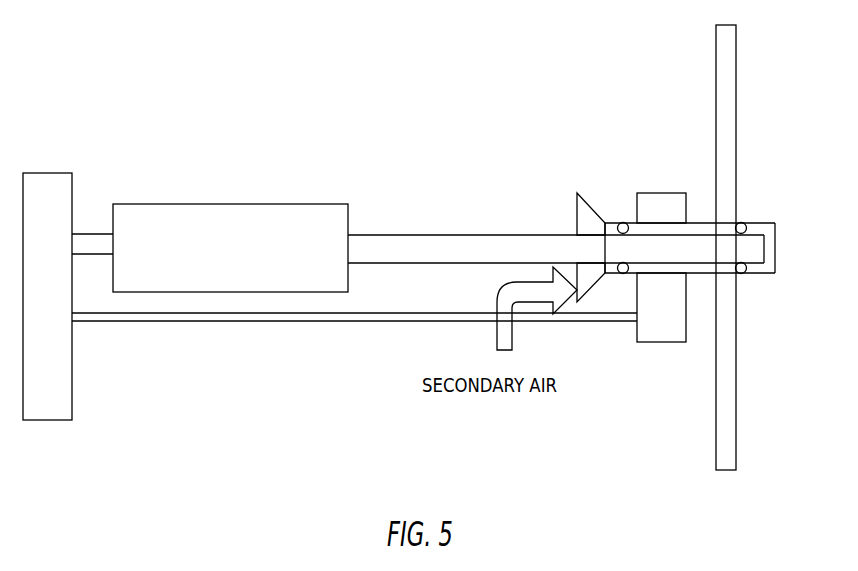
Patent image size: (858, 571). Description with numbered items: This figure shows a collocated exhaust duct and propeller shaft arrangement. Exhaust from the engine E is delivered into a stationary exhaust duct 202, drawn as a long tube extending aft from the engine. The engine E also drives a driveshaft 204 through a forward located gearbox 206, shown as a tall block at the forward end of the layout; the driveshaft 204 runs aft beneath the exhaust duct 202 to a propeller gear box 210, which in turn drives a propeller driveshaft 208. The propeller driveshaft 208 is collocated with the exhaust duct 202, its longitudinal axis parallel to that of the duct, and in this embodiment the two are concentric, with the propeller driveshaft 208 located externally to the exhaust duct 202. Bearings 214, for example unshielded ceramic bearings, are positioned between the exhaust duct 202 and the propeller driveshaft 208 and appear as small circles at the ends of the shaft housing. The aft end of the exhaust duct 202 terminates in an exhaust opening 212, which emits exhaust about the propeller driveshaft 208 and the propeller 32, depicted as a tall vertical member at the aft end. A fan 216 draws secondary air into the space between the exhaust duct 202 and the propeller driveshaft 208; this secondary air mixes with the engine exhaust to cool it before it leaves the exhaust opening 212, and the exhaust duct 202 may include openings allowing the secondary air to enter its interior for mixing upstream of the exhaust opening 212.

The forward located gearbox 206 is at (53, 173).
The engine E is at (221, 204).
The exhaust duct 202 is at (447, 226).
The driveshaft 204 is at (276, 331).
The fan 216 is at (566, 209).
The propeller driveshaft 208 is at (752, 287).
The exhaust opening 212 is at (775, 252).
The bearing 214 is at (750, 212).
The propeller gear box 210 is at (660, 183).
The propeller 32 is at (727, 470).